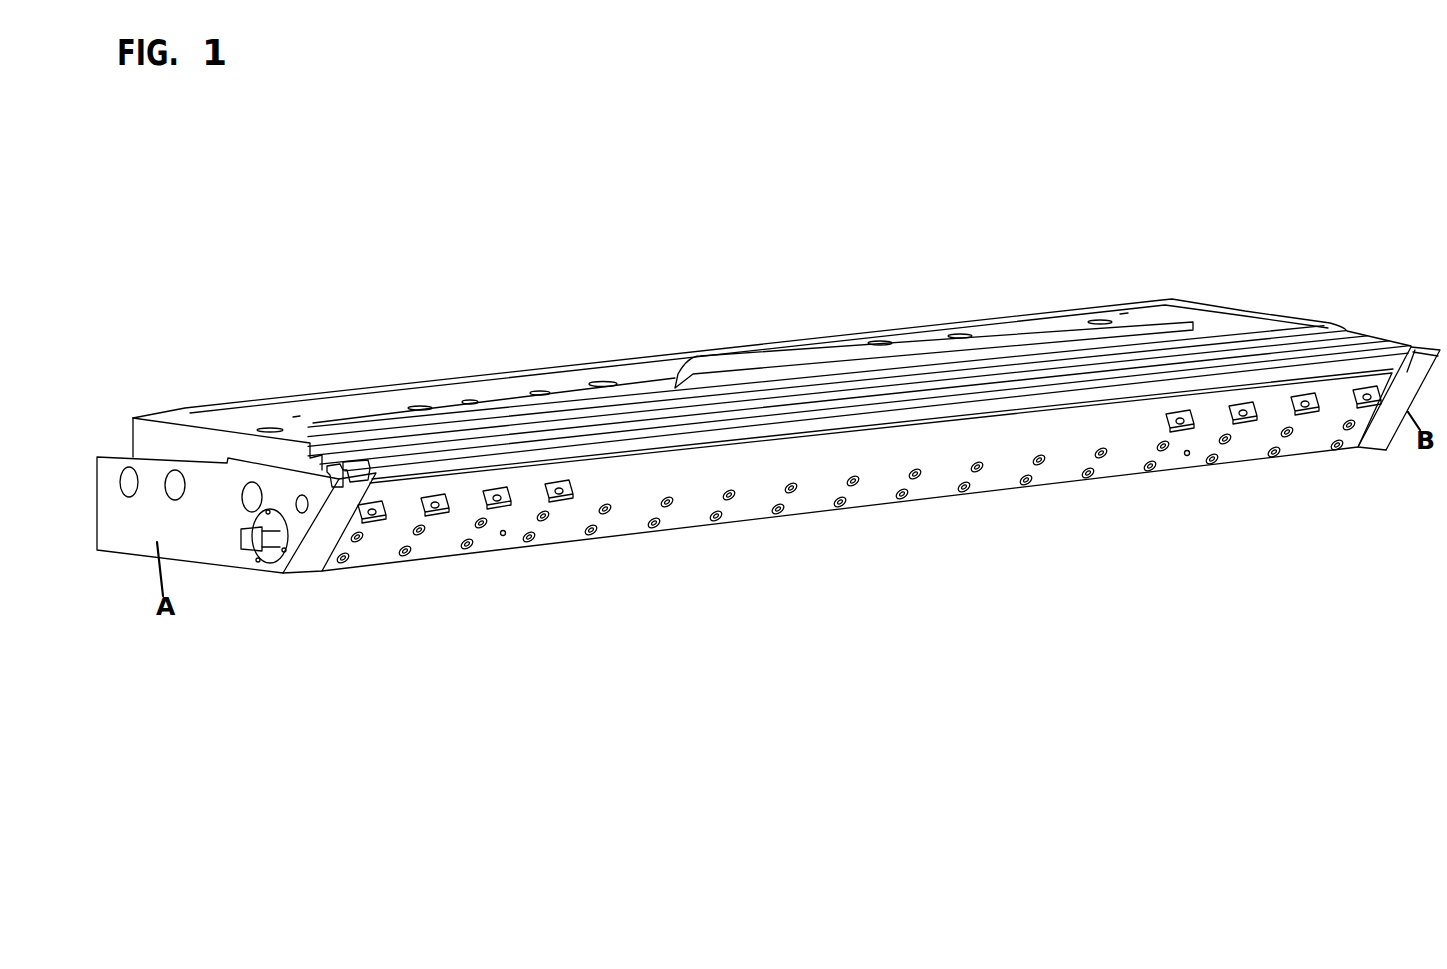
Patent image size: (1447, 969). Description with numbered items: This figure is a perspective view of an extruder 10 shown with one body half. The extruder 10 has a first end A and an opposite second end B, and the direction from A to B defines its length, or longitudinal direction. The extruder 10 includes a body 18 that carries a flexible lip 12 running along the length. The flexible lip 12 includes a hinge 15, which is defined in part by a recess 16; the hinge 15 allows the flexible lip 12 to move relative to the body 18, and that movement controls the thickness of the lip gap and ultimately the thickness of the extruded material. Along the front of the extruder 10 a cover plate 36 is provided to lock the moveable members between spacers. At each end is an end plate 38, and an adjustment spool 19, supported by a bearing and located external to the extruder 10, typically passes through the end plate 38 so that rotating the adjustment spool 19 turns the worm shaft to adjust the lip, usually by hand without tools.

The extruder 10 is at (718, 318).
The flexible lip 12 is at (380, 462).
The hinge 15 is at (352, 460).
The recess 16 is at (331, 466).
The body 18 is at (170, 440).
The adjustment spool 19 is at (247, 545).
The cover plate 36 is at (693, 507).
The end plate 38 is at (308, 558).